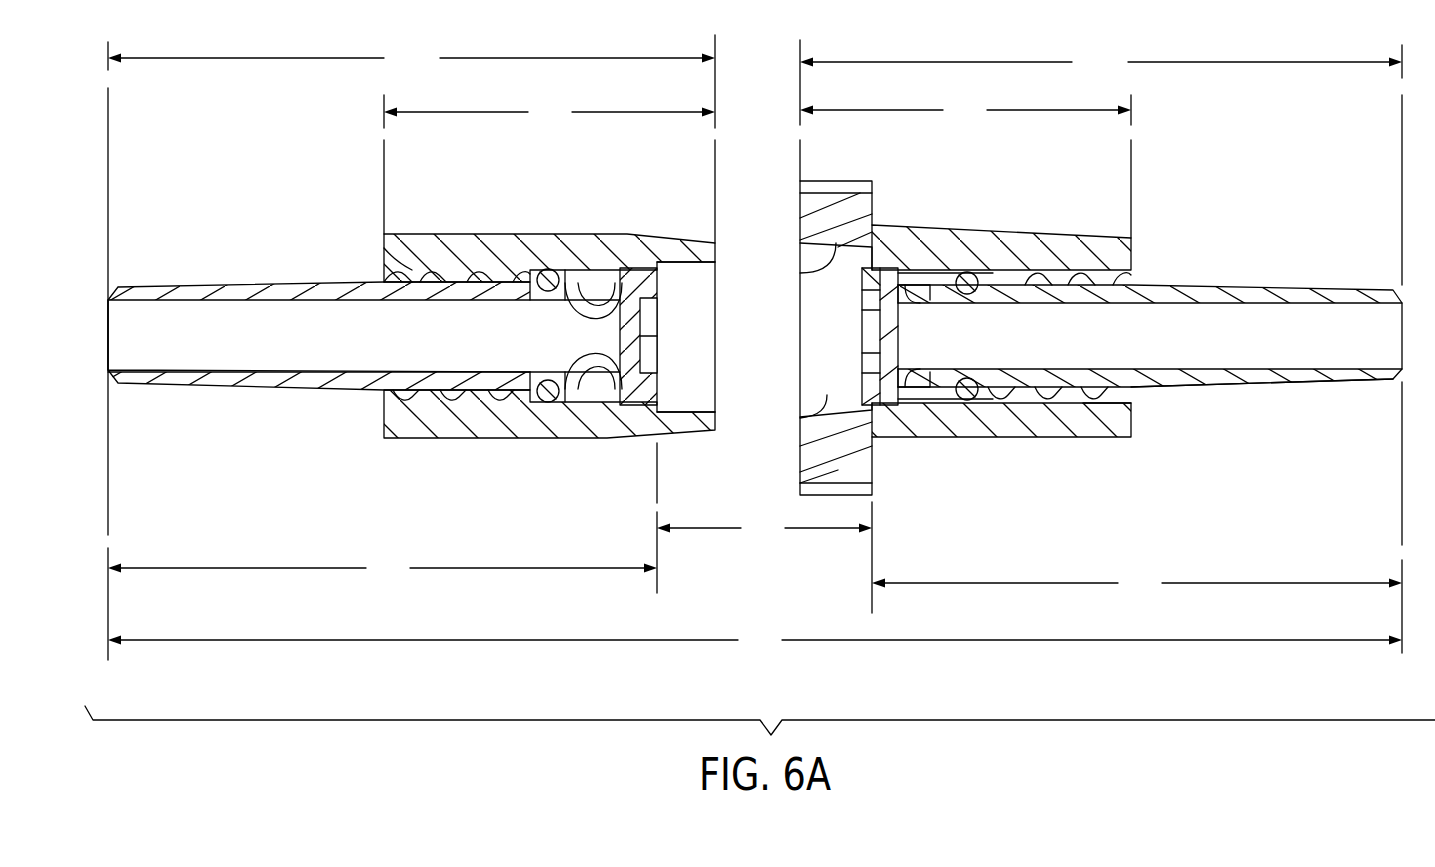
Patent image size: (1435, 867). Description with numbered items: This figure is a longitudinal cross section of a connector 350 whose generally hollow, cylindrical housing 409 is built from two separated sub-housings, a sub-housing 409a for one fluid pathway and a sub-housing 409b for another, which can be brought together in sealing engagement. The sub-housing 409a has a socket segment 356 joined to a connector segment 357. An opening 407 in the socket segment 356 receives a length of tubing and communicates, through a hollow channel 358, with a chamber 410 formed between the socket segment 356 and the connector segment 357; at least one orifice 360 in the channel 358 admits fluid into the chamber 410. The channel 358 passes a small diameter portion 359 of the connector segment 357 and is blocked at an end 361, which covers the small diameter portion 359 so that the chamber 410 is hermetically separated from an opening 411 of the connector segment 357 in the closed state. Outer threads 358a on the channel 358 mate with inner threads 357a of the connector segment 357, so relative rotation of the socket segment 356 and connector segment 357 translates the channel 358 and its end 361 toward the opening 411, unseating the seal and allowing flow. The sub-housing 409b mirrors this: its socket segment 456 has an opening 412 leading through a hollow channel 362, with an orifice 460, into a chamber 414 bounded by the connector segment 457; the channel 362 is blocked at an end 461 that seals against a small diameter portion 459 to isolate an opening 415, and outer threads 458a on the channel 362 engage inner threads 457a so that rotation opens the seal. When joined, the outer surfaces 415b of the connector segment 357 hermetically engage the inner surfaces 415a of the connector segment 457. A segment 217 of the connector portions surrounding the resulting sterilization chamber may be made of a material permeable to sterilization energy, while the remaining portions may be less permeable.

The connector 350 is at (1252, 198).
The socket segment 356 is at (382, 518).
The connector segment 357 is at (549, 266).
The inner threads 357a is at (380, 244).
The hollow channel 358 is at (282, 390).
The outer threads 358a is at (438, 272).
The small diameter portion 359 is at (626, 403).
The orifice 360 is at (598, 312).
The end 361 is at (663, 282).
The hollow channel 362 is at (1198, 390).
The opening 407 is at (167, 335).
The housing 409 is at (755, 640).
The sub-housing 409a is at (411, 347).
The sub-housing 409b is at (1101, 346).
The chamber 410 is at (588, 292).
The opening 411 is at (683, 377).
The opening 412 is at (1338, 335).
The chamber 414 is at (915, 393).
The opening 415 is at (800, 417).
The inner surfaces 415a is at (800, 272).
The outer surfaces 415b is at (690, 240).
The socket segment 456 is at (1137, 583).
The connector segment 457 is at (965, 295).
The inner threads 457a is at (1083, 397).
The outer threads 458a is at (1060, 403).
The small diameter portion 459 is at (887, 410).
The orifice 460 is at (927, 360).
The end 461 is at (862, 370).
The segment 217 is at (764, 557).